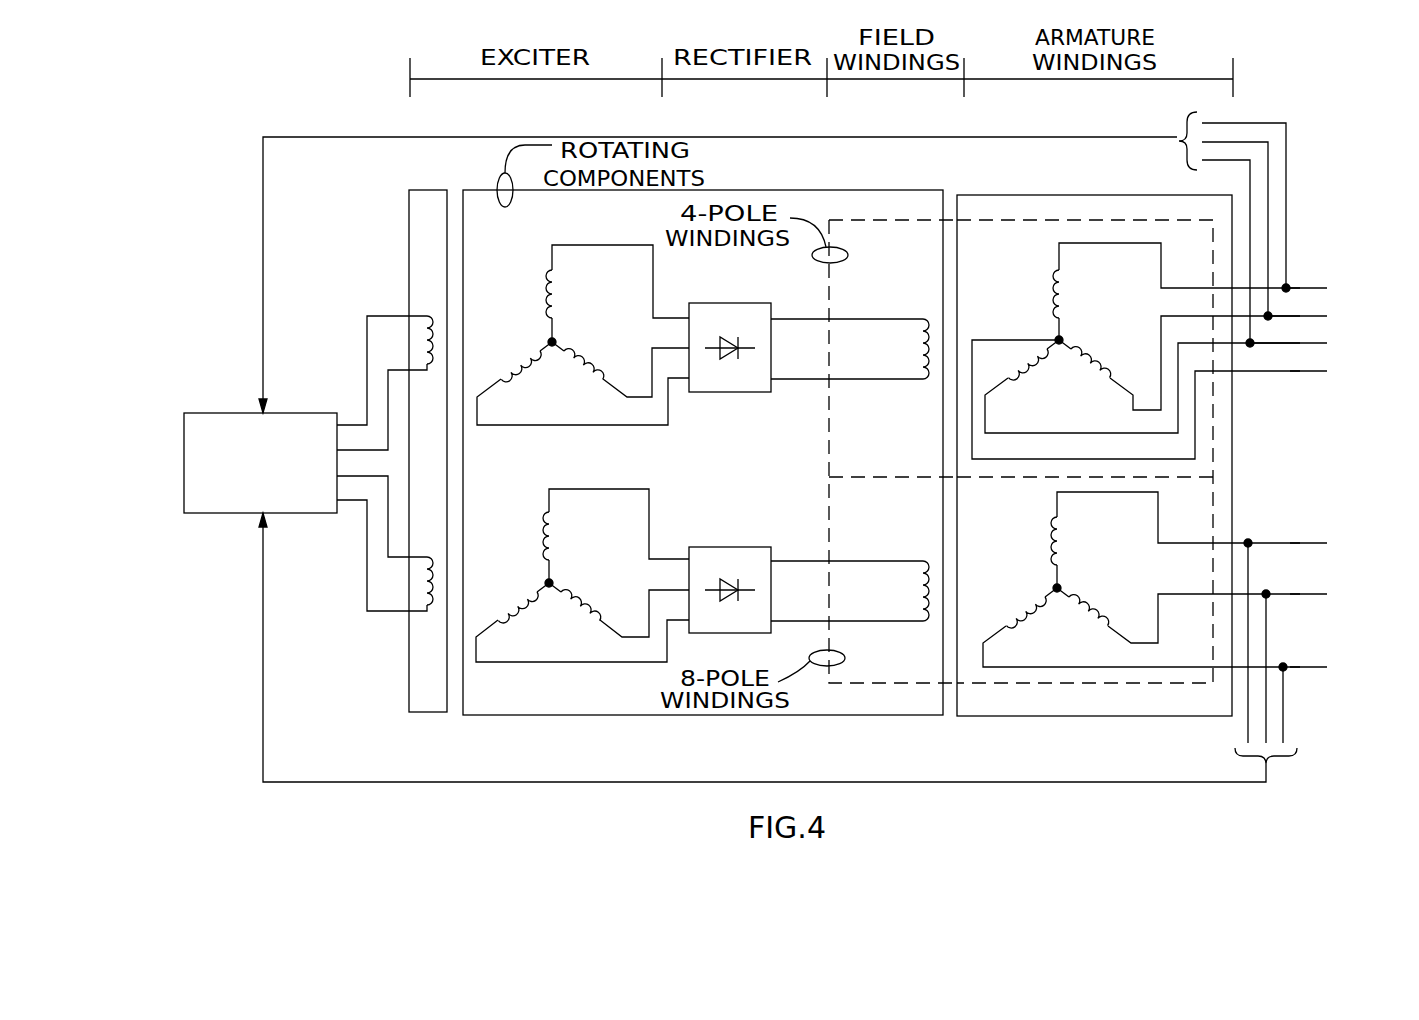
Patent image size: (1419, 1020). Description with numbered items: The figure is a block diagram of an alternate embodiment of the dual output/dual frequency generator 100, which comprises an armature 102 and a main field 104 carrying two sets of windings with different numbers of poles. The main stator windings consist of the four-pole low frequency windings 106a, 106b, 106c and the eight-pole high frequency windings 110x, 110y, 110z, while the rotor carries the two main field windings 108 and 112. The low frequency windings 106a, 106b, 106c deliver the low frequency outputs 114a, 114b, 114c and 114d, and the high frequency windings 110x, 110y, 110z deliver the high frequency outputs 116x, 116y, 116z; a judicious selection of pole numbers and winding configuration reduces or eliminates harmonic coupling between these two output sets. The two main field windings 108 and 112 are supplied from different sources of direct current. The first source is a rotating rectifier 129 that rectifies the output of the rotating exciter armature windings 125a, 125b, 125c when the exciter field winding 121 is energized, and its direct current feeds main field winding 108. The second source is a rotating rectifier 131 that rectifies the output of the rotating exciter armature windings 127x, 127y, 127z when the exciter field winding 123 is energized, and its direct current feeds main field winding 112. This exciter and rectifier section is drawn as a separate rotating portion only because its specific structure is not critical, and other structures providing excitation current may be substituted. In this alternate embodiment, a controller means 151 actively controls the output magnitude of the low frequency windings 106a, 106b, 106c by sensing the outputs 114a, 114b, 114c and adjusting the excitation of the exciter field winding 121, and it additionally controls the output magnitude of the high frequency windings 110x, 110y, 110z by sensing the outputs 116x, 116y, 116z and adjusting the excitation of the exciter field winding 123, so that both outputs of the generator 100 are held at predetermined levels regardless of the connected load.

The dual output/dual frequency generator 100 is at (956, 174).
The armature 102 is at (1040, 683).
The main field 104 is at (862, 683).
The low frequency winding 106a is at (1055, 302).
The low frequency winding 106b is at (1108, 365).
The low frequency winding 106c is at (1018, 366).
The main field winding 108 is at (921, 364).
The high frequency winding 110x is at (1058, 552).
The high frequency winding 110y is at (1105, 615).
The high frequency winding 110z is at (1020, 615).
The main field winding 112 is at (918, 605).
The low frequency output 114a is at (1298, 288).
The low frequency output 114b is at (1312, 317).
The low frequency output 114c is at (1312, 344).
The low frequency output 114d is at (1295, 372).
The high frequency output 116x is at (1295, 543).
The high frequency output 116y is at (1306, 596).
The high frequency output 116z is at (1308, 670).
The exciter field winding 121 is at (430, 316).
The exciter field winding 123 is at (430, 610).
The rotating exciter armature winding 125a is at (548, 282).
The rotating exciter armature winding 125b is at (600, 365).
The rotating exciter armature winding 125c is at (512, 368).
The rotating exciter armature winding 127x is at (548, 520).
The rotating exciter armature winding 127y is at (596, 606).
The rotating exciter armature winding 127z is at (510, 608).
The rotating rectifier 129 is at (727, 303).
The rotating rectifier 131 is at (727, 547).
The means for actively controlling output magnitude 151 is at (294, 413).